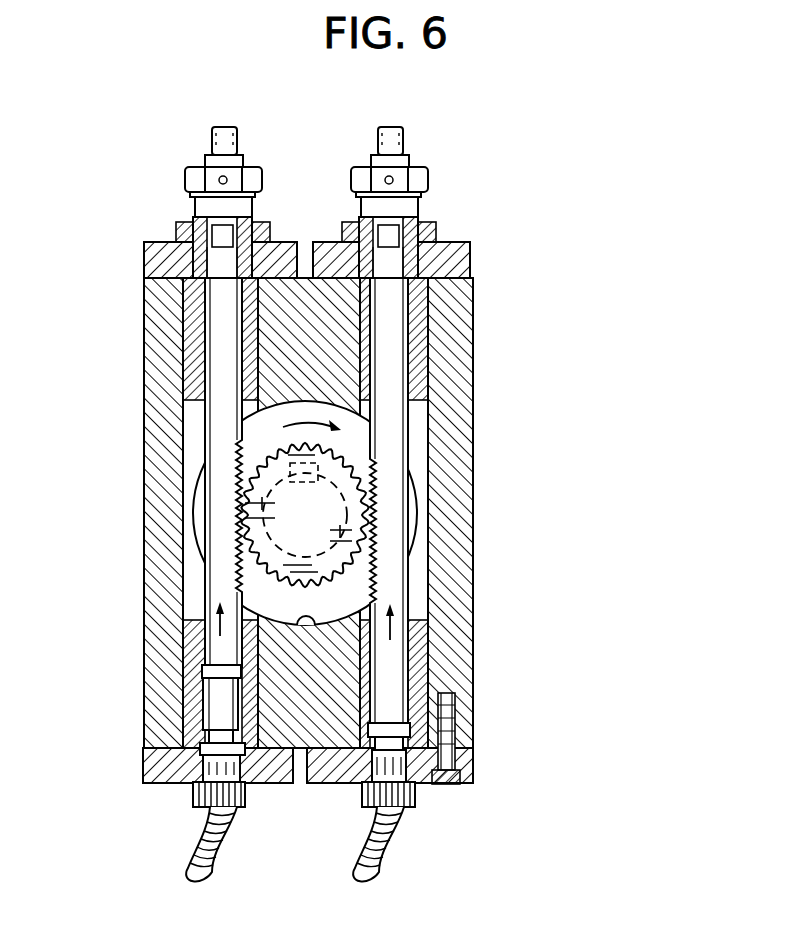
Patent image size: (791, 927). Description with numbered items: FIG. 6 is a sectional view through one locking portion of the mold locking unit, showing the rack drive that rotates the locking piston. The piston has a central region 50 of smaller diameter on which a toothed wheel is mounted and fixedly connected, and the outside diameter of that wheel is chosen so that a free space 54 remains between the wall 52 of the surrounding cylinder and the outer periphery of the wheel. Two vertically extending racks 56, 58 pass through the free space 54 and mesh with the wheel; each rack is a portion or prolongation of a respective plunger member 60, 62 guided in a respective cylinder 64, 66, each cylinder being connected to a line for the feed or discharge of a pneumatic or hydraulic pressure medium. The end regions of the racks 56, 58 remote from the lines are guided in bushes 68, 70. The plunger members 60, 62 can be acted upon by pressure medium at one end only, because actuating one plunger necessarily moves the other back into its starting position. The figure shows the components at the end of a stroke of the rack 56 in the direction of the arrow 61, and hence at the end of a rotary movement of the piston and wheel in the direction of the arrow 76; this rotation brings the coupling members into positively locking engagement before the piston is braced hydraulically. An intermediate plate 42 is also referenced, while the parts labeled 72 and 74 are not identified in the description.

The intermediate plate 42 is at (192, 517).
The central region 50 is at (350, 490).
The wall 52 is at (245, 561).
The free space 54 is at (190, 450).
The rack 56 is at (220, 413).
The rack 58 is at (393, 433).
The plunger member 60 is at (210, 658).
The arrow 61 is at (213, 620).
The plunger member 62 is at (393, 682).
The cylinder 64 is at (215, 712).
The cylinder 66 is at (412, 795).
The bush 68 is at (190, 855).
The bush 70 is at (388, 855).
The top plate 72 is at (183, 317).
The right side block 74 is at (437, 317).
The arrow 76 is at (307, 422).